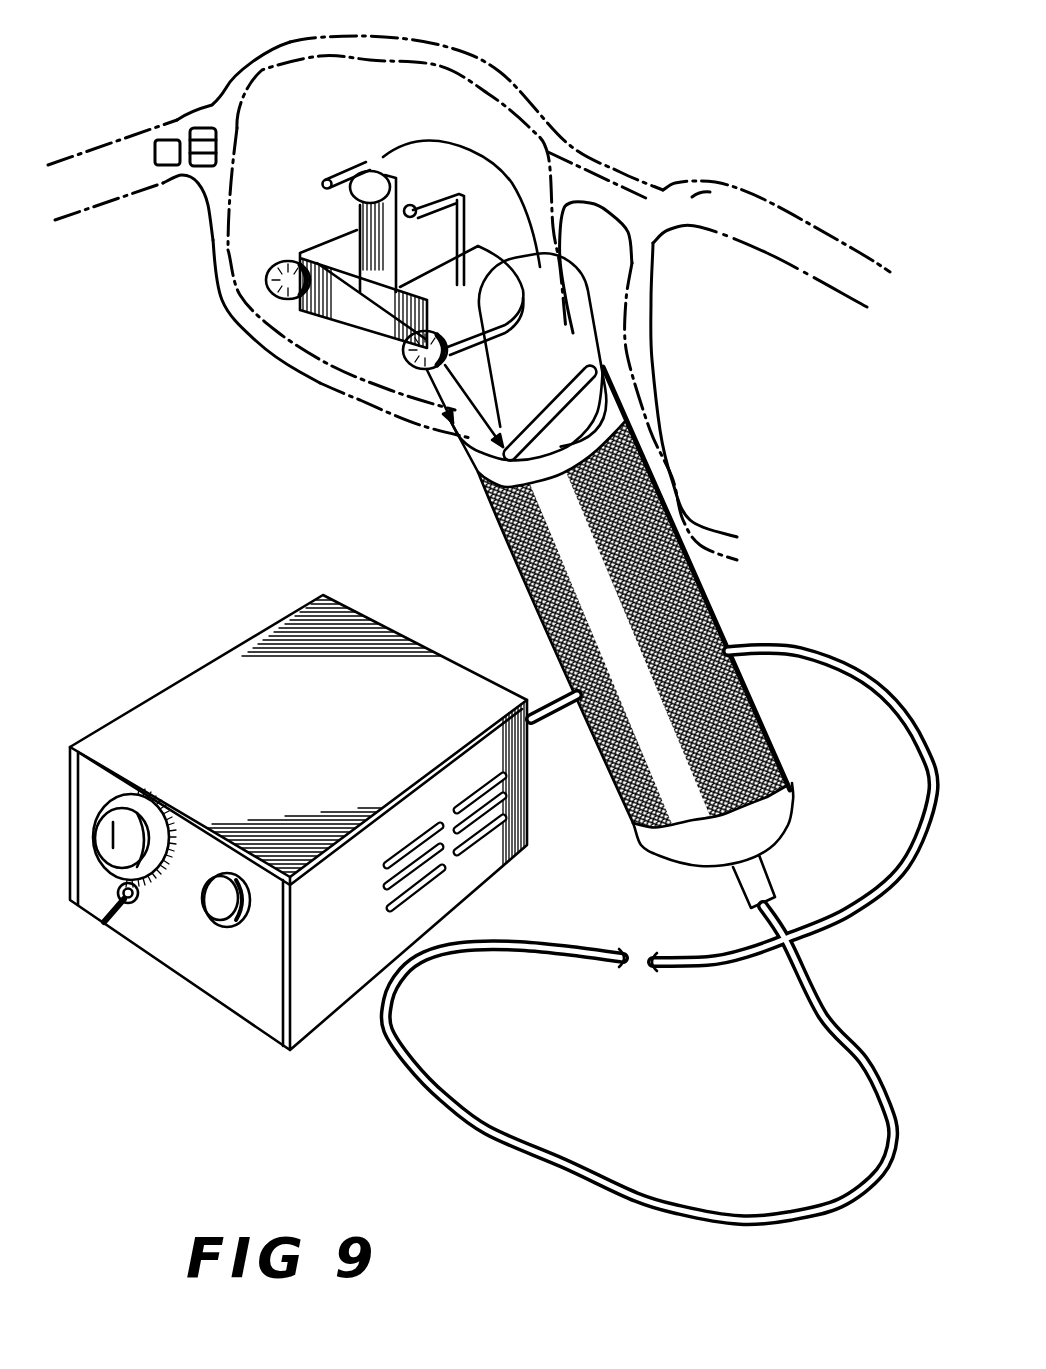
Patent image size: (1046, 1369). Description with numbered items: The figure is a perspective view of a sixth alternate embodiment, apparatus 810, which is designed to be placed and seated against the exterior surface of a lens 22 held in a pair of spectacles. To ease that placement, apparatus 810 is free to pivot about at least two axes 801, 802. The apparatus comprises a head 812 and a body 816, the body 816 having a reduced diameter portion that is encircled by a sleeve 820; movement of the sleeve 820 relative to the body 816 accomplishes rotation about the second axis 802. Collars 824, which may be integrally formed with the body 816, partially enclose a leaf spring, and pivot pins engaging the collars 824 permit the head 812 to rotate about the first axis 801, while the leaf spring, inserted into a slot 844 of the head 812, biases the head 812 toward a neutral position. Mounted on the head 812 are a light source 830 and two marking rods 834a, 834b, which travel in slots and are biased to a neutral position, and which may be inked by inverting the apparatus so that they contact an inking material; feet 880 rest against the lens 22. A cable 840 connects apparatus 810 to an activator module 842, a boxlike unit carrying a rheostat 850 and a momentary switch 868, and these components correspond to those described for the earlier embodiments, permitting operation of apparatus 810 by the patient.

The lens 22 is at (272, 102).
The apparatus 810 is at (257, 497).
The head 812 is at (478, 150).
The body 816 is at (472, 462).
The sleeve 820 is at (560, 555).
The collars 824 is at (570, 333).
The light source 830 is at (360, 190).
The marking rod 834a is at (340, 167).
The marking rod 834b is at (433, 200).
The cable 840 is at (607, 1193).
The activator module 842 is at (222, 697).
The slot 844 is at (478, 290).
The rheostat 850 is at (117, 843).
The momentary switch 868 is at (210, 903).
The feet 880 is at (272, 293).
The axis 801 is at (580, 386).
The axis 802 is at (585, 420).